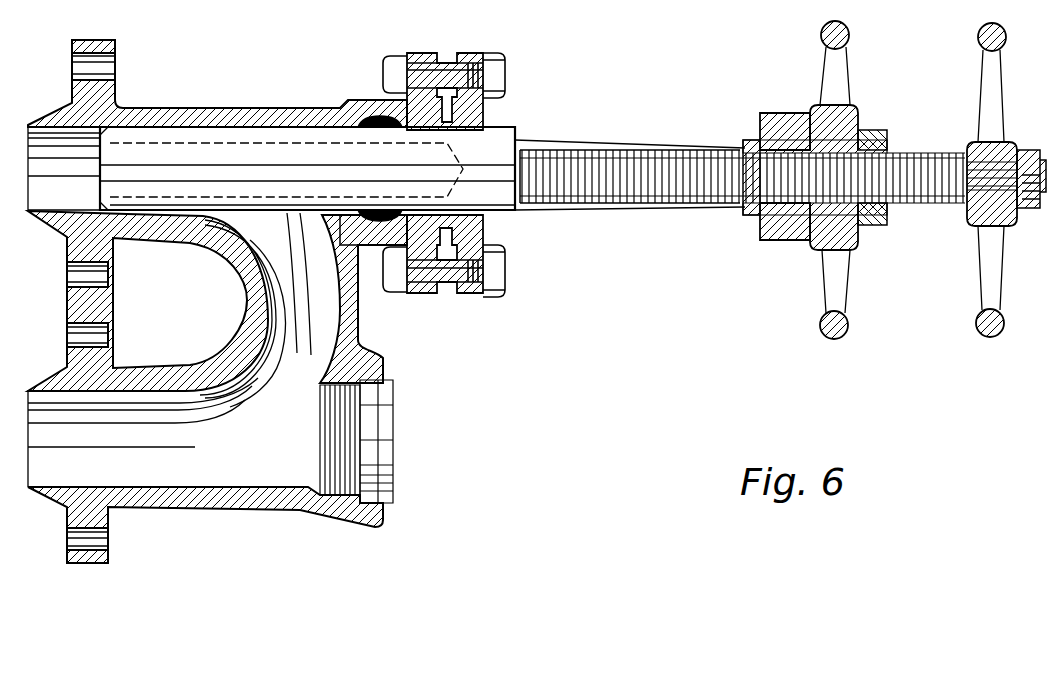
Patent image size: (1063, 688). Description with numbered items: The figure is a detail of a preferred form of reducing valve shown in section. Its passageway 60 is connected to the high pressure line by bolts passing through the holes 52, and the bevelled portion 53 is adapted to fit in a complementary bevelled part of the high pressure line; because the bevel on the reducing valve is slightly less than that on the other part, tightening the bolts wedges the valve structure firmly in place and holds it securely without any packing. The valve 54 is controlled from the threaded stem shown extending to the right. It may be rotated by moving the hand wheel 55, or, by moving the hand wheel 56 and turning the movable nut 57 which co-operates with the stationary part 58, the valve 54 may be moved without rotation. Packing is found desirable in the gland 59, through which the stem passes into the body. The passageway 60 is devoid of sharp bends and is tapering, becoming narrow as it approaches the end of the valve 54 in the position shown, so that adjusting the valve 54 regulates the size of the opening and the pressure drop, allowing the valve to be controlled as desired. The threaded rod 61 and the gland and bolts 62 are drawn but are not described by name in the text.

The holes 52 is at (108, 68).
The bevelled portion 53 is at (62, 228).
The valve 54 is at (268, 208).
The hand wheel 55 is at (985, 337).
The hand wheel 56 is at (829, 337).
The movable nut 57 is at (745, 222).
The stationary part 58 is at (782, 240).
The gland 59 is at (372, 114).
The passageway 60 is at (255, 310).
The threaded rod 61 is at (780, 175).
The gland and bolts 62 is at (422, 175).